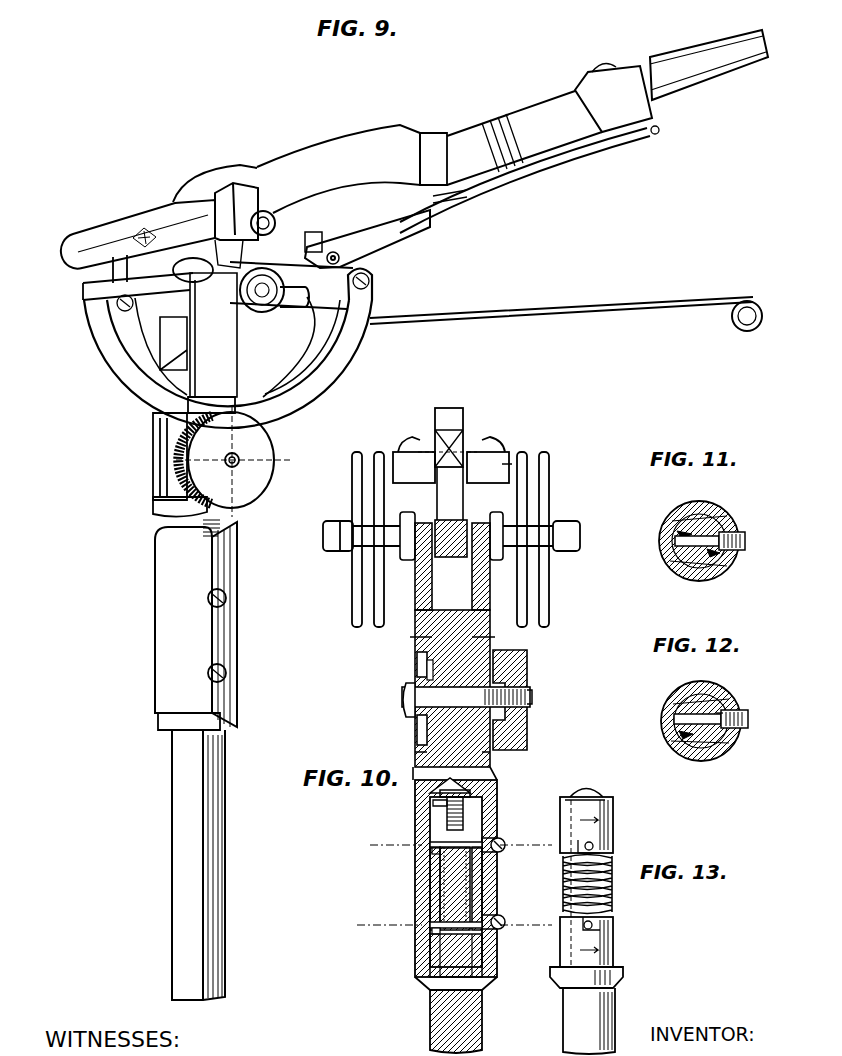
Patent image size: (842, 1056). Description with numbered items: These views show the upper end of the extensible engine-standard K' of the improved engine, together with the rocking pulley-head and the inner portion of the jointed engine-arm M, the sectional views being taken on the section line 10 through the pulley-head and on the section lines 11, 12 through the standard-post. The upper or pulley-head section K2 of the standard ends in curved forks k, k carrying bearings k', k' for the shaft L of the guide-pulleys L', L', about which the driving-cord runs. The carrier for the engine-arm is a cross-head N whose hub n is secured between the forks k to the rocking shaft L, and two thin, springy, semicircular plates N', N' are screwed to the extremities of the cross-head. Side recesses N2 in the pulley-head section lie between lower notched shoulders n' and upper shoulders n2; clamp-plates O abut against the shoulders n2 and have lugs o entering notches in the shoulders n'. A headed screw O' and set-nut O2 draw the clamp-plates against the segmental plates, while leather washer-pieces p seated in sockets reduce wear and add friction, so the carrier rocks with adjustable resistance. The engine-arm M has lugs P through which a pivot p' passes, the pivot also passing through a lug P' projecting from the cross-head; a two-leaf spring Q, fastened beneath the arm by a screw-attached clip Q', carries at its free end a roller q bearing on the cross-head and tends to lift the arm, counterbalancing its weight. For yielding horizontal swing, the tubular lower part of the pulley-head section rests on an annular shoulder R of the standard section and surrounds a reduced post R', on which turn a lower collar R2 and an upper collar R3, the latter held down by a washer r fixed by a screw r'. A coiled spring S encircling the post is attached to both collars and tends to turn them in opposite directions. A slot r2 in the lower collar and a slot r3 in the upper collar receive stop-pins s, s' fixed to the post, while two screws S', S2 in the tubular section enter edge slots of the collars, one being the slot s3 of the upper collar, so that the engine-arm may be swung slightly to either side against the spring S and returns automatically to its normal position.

In FIG. 9, the lug P' is at (138, 226).
In FIG. 10, the lug P' is at (463, 442).
In FIG. 9, the lugs P is at (226, 199).
In FIG. 10, the lugs P is at (463, 444).
In FIG. 9, the engine-arm M is at (353, 150).
In FIG. 10, the engine-arm M is at (451, 408).
In FIG. 9, the screw-attached clip Q' is at (617, 88).
In FIG. 9, the spring Q is at (525, 180).
In FIG. 9, the cross-head N is at (533, 270).
In FIG. 10, the cross-head N is at (452, 664).
In FIG. 9, the screw r' is at (273, 223).
In FIG. 10, the screw r' is at (431, 787).
In FIG. 13, the screw r' is at (586, 782).
In FIG. 9, the roller q is at (320, 246).
In FIG. 9, the curved forks k is at (220, 321).
In FIG. 10, the curved forks k is at (449, 566).
In FIG. 10, the bearings k' is at (454, 526).
In FIG. 10, the hub n is at (460, 512).
In FIG. 9, the lower shoulders n' is at (167, 504).
In FIG. 10, the lower shoulders n' is at (457, 761).
In FIG. 10, the upper shoulders n2 is at (414, 640).
In FIG. 9, the guide-pulleys L' is at (125, 277).
In FIG. 10, the guide-pulleys L' is at (445, 539).
In FIG. 9, the shaft L is at (274, 314).
In FIG. 10, the shaft L is at (446, 530).
In FIG. 9, the segmental plates N' is at (220, 345).
In FIG. 10, the segmental plates N' is at (469, 700).
In FIG. 10, the side recesses N2 is at (418, 735).
In FIG. 9, the section line 10 is at (234, 400).
In FIG. 10, the section line 11 is at (461, 847).
In FIG. 10, the section line 12 is at (454, 928).
In FIG. 9, the clamp-plates O is at (146, 456).
In FIG. 10, the clamp-plates O is at (460, 654).
In FIG. 9, the headed screw O' is at (241, 460).
In FIG. 10, the headed screw O' is at (483, 700).
In FIG. 9, the set-nut O2 is at (223, 474).
In FIG. 10, the set-nut O2 is at (530, 712).
In FIG. 9, the lug o is at (226, 522).
In FIG. 10, the lug o is at (420, 780).
In FIG. 10, the washer-like pieces p is at (455, 672).
In FIG. 10, the pivot p' is at (525, 450).
In FIG. 9, the pulley-head section K2 is at (173, 623).
In FIG. 10, the pulley-head section K2 is at (415, 712).
In FIG. 9, the extensible engine-standard K' is at (176, 865).
In FIG. 10, the extensible engine-standard K' is at (437, 1021).
In FIG. 13, the extensible engine-standard K' is at (601, 1021).
In FIG. 10, the coiled spring S is at (477, 888).
In FIG. 13, the coiled spring S is at (576, 884).
In FIG. 9, the screw S' is at (235, 671).
In FIG. 10, the screw S' is at (507, 909).
In FIG. 12, the screw S' is at (745, 712).
In FIG. 9, the screw S2 is at (227, 598).
In FIG. 10, the screw S2 is at (501, 840).
In FIG. 11, the screw S2 is at (746, 541).
In FIG. 12, the screw S2 is at (732, 707).
In FIG. 10, the pin s is at (415, 941).
In FIG. 12, the pin s is at (679, 718).
In FIG. 13, the pin s is at (607, 915).
In FIG. 10, the pin s' is at (420, 857).
In FIG. 11, the pin s' is at (678, 549).
In FIG. 13, the pin s' is at (612, 848).
In FIG. 11, the edge slot s3 is at (727, 561).
In FIG. 10, the annular shoulder R is at (469, 986).
In FIG. 13, the annular shoulder R is at (605, 972).
In FIG. 10, the post R' is at (411, 888).
In FIG. 11, the post R' is at (699, 555).
In FIG. 12, the post R' is at (704, 701).
In FIG. 10, the lower collar R2 is at (487, 951).
In FIG. 12, the lower collar R2 is at (720, 745).
In FIG. 13, the lower collar R2 is at (613, 943).
In FIG. 10, the upper collar R3 is at (470, 818).
In FIG. 11, the upper collar R3 is at (720, 515).
In FIG. 13, the upper collar R3 is at (613, 831).
In FIG. 10, the washer r is at (418, 812).
In FIG. 13, the washer r is at (577, 790).
In FIG. 12, the slot r2 is at (690, 746).
In FIG. 13, the slot r2 is at (601, 924).
In FIG. 11, the slot r3 is at (678, 530).
In FIG. 13, the slot r3 is at (593, 846).